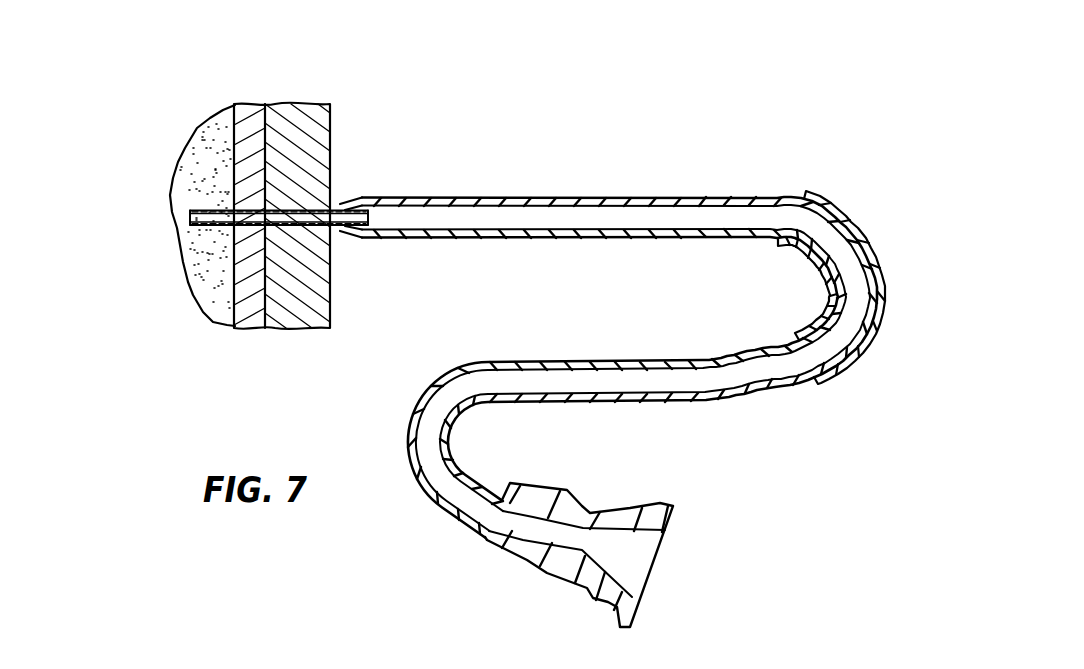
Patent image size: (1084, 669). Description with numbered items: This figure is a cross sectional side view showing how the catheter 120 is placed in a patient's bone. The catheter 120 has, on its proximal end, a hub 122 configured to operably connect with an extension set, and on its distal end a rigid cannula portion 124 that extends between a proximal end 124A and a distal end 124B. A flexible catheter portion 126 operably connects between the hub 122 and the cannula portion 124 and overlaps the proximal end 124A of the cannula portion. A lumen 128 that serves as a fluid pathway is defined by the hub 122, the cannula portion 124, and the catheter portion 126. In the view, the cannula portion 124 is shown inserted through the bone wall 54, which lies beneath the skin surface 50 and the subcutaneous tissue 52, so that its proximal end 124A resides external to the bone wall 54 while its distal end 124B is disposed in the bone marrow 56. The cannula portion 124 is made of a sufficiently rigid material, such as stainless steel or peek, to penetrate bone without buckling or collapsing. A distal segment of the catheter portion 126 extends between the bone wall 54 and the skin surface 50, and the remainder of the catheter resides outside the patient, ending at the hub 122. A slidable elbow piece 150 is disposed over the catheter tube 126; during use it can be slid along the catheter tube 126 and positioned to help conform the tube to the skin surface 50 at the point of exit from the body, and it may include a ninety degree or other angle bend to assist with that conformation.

The skin surface 50 is at (330, 124).
The subcutaneous tissue 52 is at (295, 115).
The bone wall 54 is at (248, 121).
The bone marrow 56 is at (183, 208).
The catheter 120 is at (650, 351).
The hub 122 is at (645, 553).
The cannula portion 124 is at (211, 228).
The proximal end of cannula portion 124A is at (370, 211).
The distal end of cannula portion 124B is at (190, 224).
The flexible catheter portion 126 is at (765, 198).
The lumen 128 is at (760, 372).
The slidable elbow piece 150 is at (865, 344).